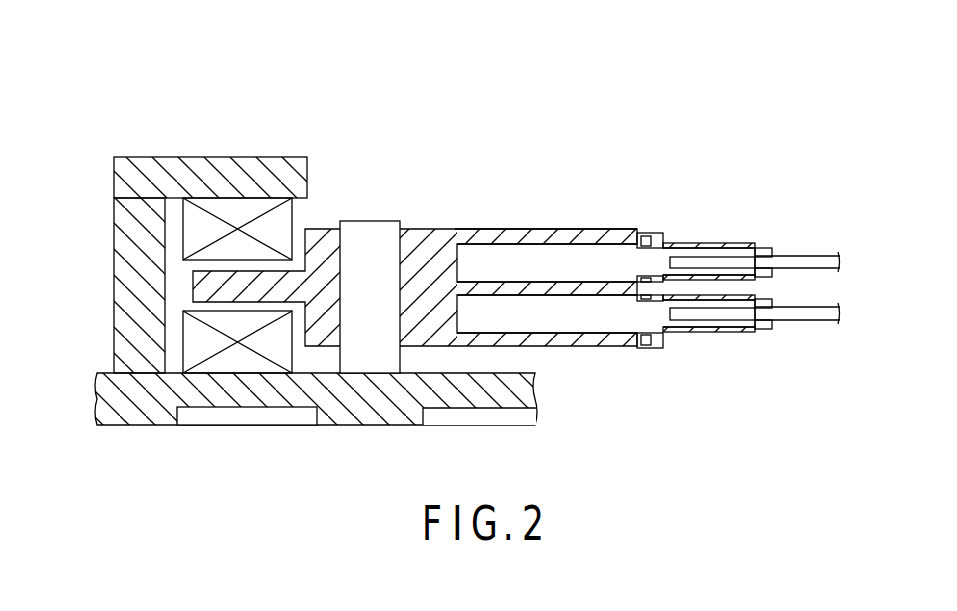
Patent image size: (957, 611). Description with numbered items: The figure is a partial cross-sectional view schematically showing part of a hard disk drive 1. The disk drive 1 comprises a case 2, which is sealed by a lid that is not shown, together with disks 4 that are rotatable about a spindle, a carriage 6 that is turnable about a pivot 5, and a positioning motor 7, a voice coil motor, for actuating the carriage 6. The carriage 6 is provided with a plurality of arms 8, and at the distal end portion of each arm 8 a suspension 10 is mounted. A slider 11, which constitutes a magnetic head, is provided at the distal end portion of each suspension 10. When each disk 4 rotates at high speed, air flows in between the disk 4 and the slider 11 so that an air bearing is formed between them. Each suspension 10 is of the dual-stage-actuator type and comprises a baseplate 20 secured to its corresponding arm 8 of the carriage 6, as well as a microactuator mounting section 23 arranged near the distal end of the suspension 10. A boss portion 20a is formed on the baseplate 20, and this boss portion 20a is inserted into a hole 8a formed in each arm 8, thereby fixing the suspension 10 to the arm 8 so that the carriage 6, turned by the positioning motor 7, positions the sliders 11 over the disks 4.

The disk drive 1 is at (256, 117).
The case 2 is at (148, 427).
The disk 4 is at (826, 257).
The pivot 5 is at (372, 228).
The carriage 6 is at (503, 229).
The positioning motor 7 is at (236, 358).
The arm 8 is at (585, 230).
The hole 8a is at (652, 233).
The suspension 10 is at (739, 243).
The slider 11 is at (779, 248).
The baseplate 20 is at (668, 243).
The boss portion 20a is at (641, 236).
The microactuator mounting section 23 is at (760, 248).